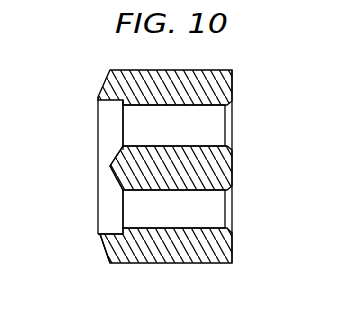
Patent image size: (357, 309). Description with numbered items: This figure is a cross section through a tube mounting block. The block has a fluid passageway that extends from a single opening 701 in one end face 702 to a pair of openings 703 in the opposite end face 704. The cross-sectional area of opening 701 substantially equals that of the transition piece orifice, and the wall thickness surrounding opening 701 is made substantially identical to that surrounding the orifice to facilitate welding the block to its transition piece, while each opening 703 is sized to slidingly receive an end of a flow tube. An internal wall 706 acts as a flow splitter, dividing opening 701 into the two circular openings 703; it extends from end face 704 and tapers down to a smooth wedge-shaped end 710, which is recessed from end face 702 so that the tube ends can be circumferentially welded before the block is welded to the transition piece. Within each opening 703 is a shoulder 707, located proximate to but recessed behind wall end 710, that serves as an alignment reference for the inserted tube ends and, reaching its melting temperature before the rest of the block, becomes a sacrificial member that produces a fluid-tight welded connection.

The opening 701 is at (98, 100).
The end face 702 is at (98, 235).
The openings 703 is at (232, 122).
The end face 704 is at (232, 247).
The internal wall 706 is at (217, 168).
The shoulder 707 is at (123, 146).
The wedge-shaped end 710 is at (110, 166).